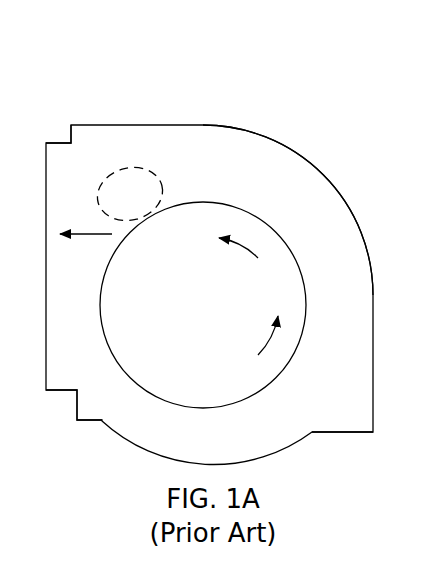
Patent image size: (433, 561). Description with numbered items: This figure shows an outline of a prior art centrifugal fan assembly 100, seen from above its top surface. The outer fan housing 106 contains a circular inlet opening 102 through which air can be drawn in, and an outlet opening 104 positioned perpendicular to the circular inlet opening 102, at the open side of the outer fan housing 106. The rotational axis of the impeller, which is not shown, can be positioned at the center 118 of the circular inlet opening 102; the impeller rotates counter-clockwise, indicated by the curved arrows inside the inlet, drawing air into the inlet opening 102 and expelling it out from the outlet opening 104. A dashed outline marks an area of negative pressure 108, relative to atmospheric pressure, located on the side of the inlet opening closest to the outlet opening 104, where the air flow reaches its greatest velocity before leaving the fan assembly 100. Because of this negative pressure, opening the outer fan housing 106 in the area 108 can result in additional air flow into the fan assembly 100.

The centrifugal fan assembly 100 is at (314, 124).
The circular inlet opening 102 is at (289, 244).
The outlet opening 104 is at (46, 372).
The outer fan housing 106 is at (349, 209).
The area of negative pressure 108 is at (147, 166).
The center of the circular inlet opening 118 is at (197, 314).